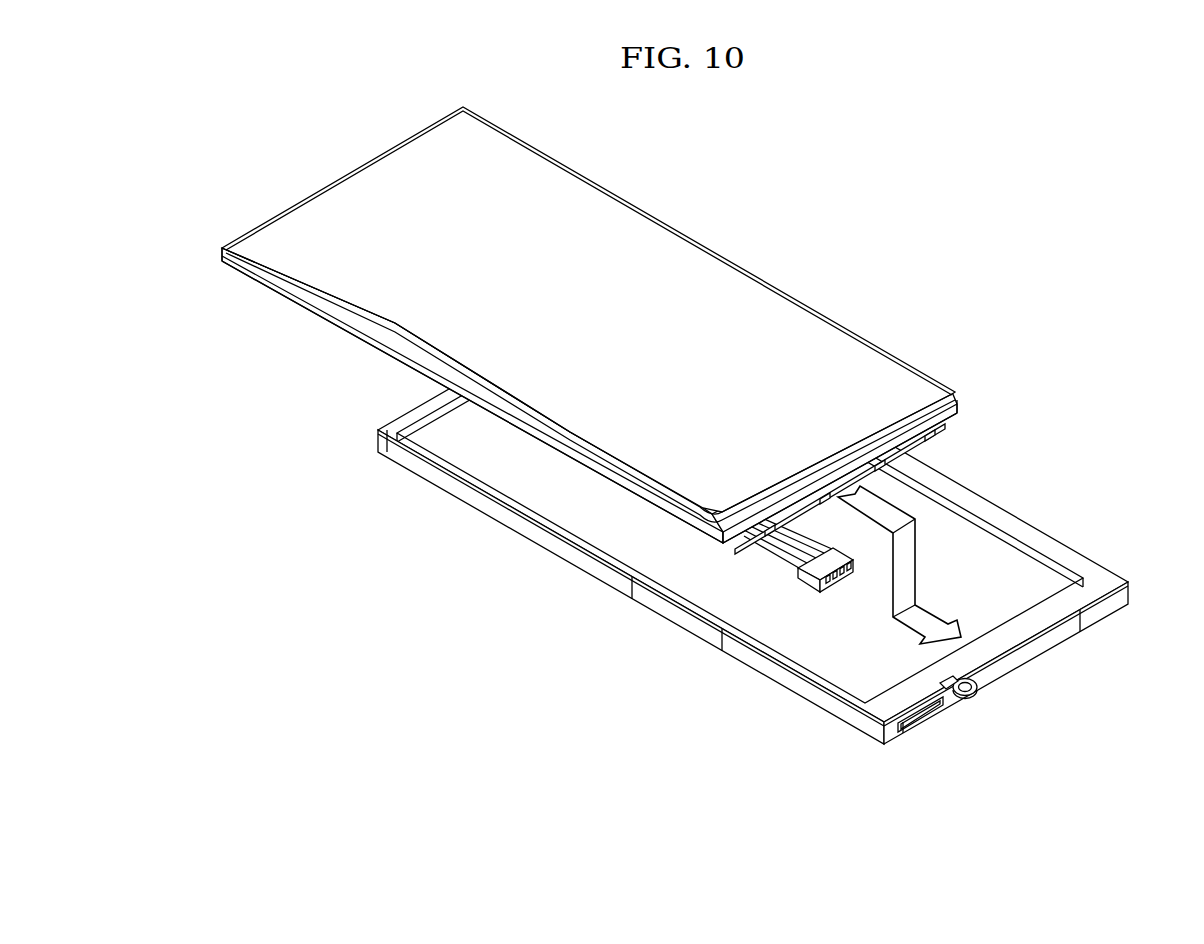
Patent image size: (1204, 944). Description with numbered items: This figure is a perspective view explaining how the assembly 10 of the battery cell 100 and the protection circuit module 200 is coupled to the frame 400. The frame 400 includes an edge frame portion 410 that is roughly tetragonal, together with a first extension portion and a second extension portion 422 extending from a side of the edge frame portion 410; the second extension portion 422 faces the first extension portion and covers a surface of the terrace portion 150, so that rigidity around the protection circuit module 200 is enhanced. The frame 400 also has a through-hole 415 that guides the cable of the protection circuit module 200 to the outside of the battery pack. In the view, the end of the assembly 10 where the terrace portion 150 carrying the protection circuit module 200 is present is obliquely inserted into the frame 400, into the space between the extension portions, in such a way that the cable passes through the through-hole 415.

The assembly 10 is at (848, 189).
The battery cell 100 is at (782, 282).
The terrace portion 150 is at (937, 386).
The protection circuit module 200 is at (943, 427).
The frame 400 is at (1118, 570).
The edge frame portion 410 is at (800, 689).
The through-hole 415 is at (912, 715).
The second extension portion 422 is at (1032, 624).